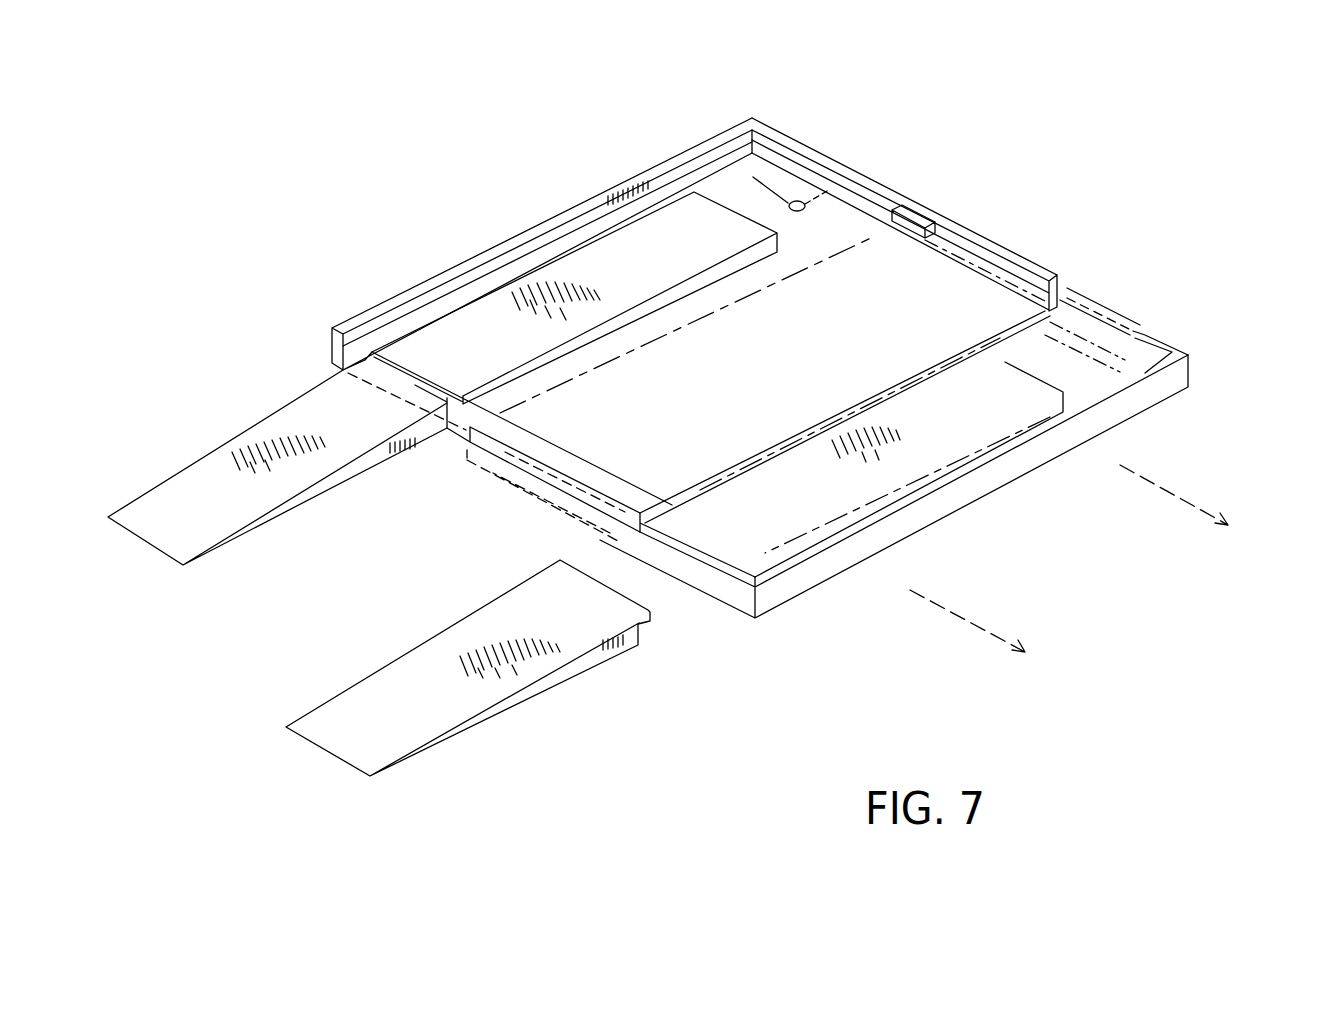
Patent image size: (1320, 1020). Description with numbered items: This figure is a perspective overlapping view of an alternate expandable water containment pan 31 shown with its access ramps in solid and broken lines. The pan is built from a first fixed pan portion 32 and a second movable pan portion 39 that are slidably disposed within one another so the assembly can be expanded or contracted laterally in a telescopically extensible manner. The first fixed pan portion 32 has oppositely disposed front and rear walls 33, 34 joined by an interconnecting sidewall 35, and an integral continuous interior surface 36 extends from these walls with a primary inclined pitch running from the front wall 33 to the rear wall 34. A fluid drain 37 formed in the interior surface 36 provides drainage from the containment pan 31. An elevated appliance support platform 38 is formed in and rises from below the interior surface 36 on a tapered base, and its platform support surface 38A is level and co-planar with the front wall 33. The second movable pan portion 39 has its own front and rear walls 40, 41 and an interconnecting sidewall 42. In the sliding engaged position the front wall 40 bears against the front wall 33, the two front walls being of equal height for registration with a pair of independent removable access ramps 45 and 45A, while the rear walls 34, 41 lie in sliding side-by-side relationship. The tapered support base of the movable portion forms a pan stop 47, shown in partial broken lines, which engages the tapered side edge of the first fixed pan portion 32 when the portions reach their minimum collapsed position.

The expandable water containment pan 31 is at (1069, 213).
The first fixed pan portion 32 is at (839, 158).
The front wall 33 is at (462, 425).
The rear wall 34 is at (790, 158).
The sidewall 35 is at (567, 232).
The interior surface 36 is at (914, 264).
The fluid drain 37 is at (753, 177).
The elevated appliance support platform 38 is at (470, 317).
The platform support surface 38A is at (678, 231).
The second movable pan portion 39 is at (1131, 300).
The front wall 40 is at (725, 600).
The rear wall 41 is at (1140, 350).
The sidewall 42 is at (990, 482).
The access ramp 45 is at (192, 485).
The access ramp 45A is at (393, 680).
The pan stop 47 is at (1087, 313).